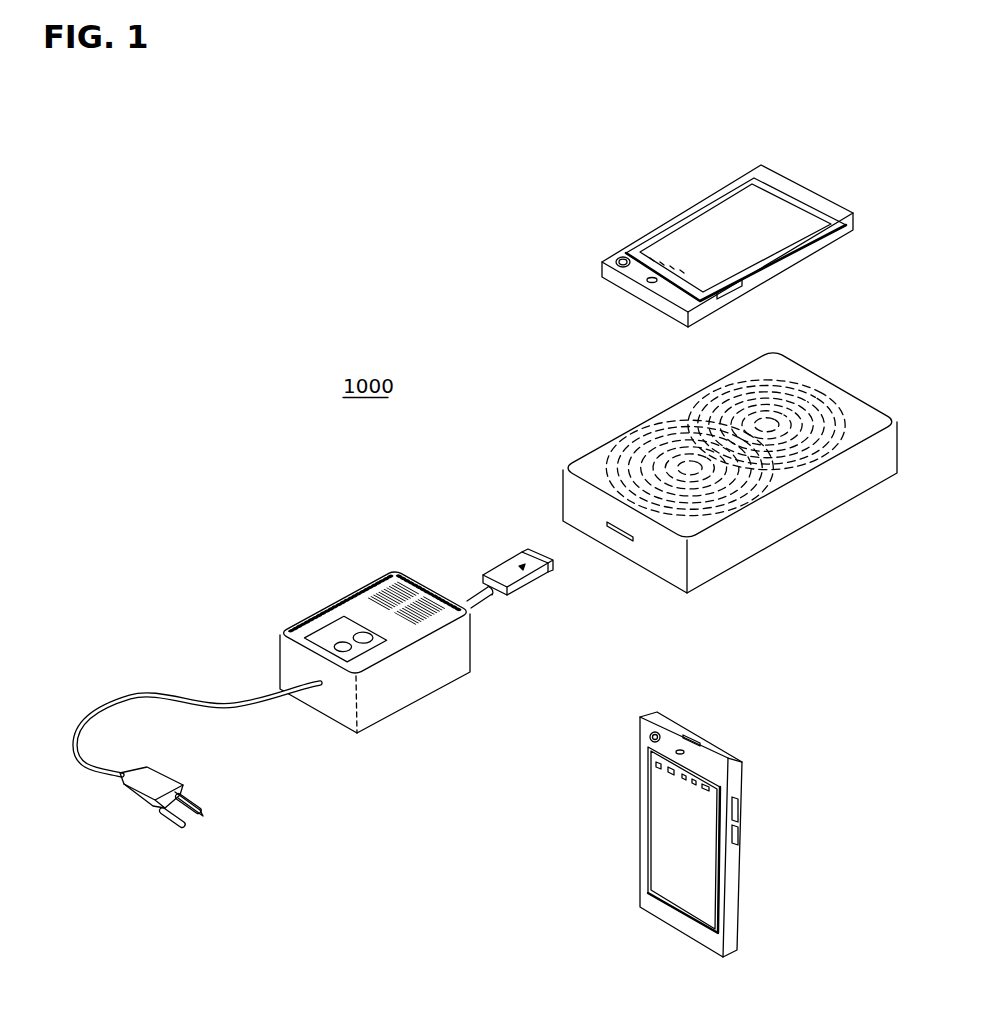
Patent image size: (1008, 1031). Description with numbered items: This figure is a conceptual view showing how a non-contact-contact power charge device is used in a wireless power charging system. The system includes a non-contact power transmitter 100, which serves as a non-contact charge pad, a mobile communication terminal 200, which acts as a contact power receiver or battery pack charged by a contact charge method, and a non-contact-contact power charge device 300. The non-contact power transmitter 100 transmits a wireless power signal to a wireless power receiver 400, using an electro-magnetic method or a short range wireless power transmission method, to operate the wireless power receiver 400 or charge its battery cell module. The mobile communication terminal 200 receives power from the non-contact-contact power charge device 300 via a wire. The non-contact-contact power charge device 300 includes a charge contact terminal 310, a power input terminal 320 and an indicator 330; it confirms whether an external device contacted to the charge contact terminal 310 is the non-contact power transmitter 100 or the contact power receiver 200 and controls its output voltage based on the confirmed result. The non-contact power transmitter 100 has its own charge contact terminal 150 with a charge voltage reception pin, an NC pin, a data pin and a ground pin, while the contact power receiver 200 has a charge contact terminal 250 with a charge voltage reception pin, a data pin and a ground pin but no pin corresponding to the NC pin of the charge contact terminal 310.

The non-contact power transmitter 100 is at (673, 413).
The charge contact terminal 150 is at (619, 540).
The mobile communication terminal 200 is at (717, 755).
The charge contact terminal 250 is at (688, 733).
The non-contact-contact power charge device 300 is at (307, 608).
The charge contact terminal 310 is at (497, 568).
The power input terminal 320 is at (140, 805).
The indicator 330 is at (364, 647).
The wireless power receiver 400 is at (622, 244).